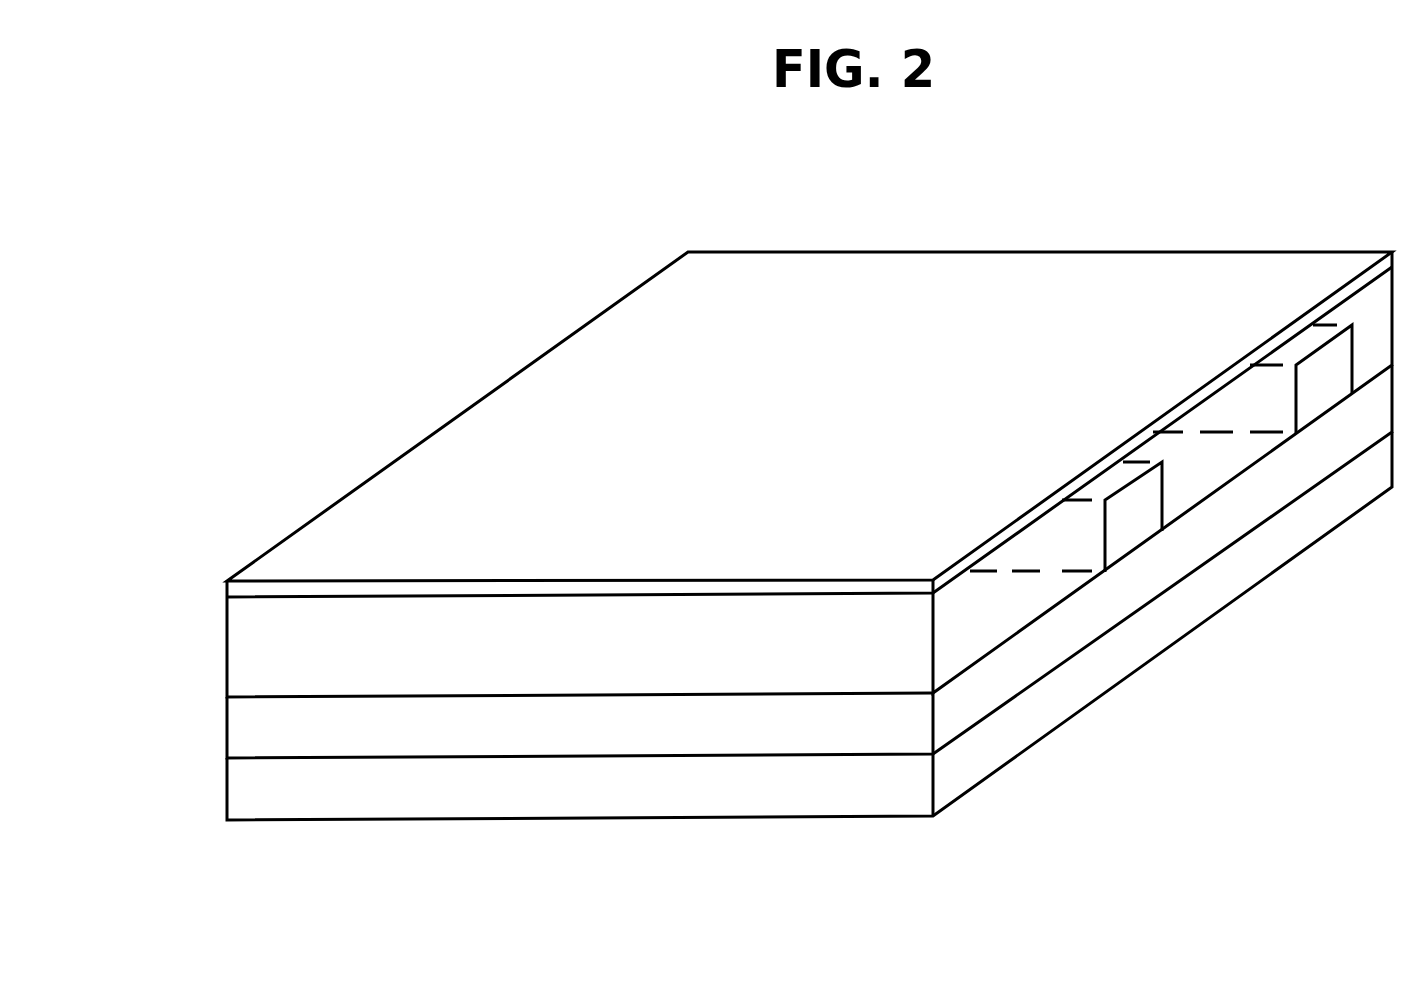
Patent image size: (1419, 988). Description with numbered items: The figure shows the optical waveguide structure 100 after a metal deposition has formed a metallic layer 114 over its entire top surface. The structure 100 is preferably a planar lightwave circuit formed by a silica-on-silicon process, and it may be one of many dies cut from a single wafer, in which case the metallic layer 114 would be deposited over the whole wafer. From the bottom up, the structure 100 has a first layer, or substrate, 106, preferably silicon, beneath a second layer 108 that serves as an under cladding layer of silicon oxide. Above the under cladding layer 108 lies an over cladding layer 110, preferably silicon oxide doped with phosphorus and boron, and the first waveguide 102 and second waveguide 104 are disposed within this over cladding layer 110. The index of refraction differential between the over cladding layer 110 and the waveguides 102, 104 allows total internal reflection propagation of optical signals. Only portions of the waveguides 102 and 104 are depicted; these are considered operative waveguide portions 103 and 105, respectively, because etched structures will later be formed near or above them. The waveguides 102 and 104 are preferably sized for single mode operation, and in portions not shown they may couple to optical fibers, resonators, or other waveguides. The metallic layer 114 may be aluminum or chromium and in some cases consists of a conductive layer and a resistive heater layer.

The optical waveguide structure 100 is at (592, 227).
The metallic layer 114 is at (1058, 278).
The operative waveguide portion 103 is at (1213, 393).
The over cladding layer 110 is at (240, 657).
The operative waveguide portion 105 is at (1050, 538).
The second layer 108 is at (240, 738).
The first layer 106 is at (988, 748).
The first waveguide 102 is at (1327, 378).
The second waveguide 104 is at (1137, 525).